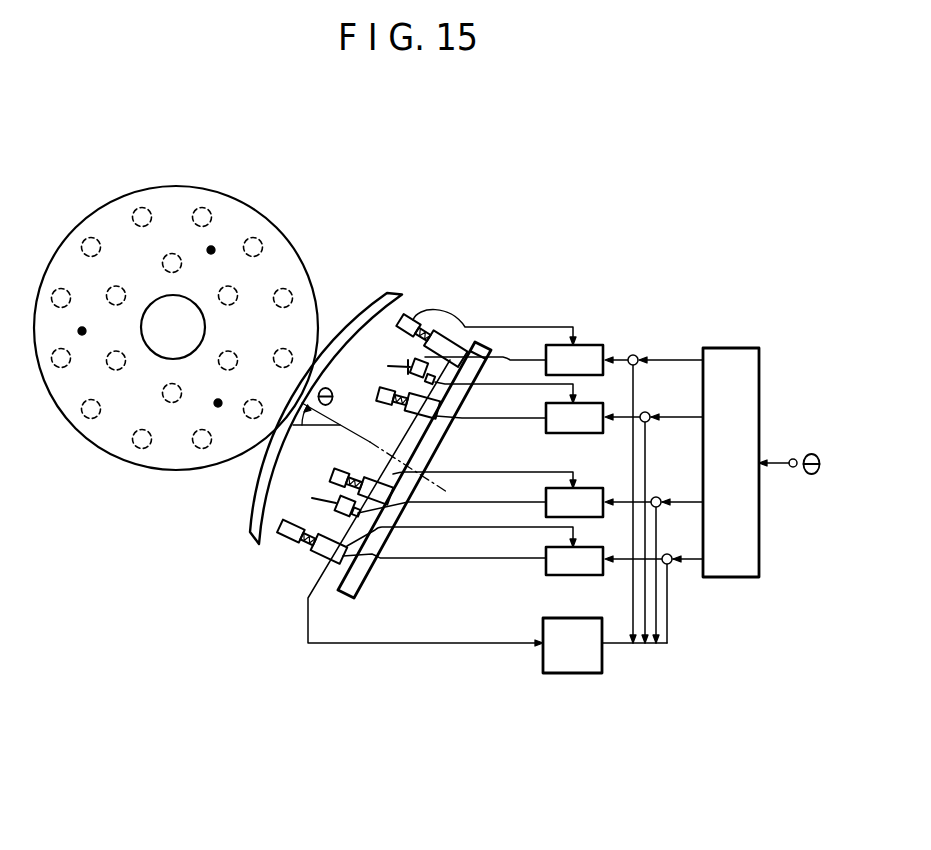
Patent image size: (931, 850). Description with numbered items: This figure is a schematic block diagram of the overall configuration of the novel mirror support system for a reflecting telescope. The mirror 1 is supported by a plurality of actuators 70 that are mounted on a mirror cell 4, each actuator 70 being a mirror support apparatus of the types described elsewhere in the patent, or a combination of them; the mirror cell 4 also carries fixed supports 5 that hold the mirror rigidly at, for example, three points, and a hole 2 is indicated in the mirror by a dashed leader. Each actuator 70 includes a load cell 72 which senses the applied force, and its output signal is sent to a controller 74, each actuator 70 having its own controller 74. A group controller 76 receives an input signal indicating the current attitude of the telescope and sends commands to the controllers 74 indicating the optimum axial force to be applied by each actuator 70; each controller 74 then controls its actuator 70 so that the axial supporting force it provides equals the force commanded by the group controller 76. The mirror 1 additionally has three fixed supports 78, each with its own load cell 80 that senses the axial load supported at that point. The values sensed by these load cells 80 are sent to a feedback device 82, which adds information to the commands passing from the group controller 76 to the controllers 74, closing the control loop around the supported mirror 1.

The mirror 1 is at (103, 443).
The hole 2 is at (237, 293).
The mirror cell 4 is at (363, 574).
The fixed supports 5 is at (211, 248).
The actuators 70 is at (316, 556).
The load cell 72 is at (298, 534).
The controller 74 is at (553, 574).
The group controller 76 is at (750, 392).
The fixed supports 78 is at (330, 506).
The load cell 80 is at (318, 497).
The feedback device 82 is at (582, 660).